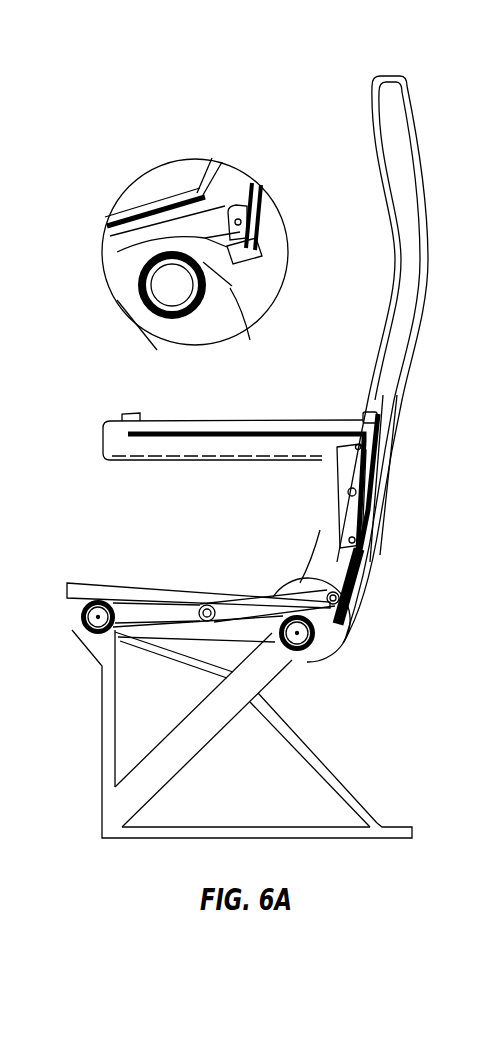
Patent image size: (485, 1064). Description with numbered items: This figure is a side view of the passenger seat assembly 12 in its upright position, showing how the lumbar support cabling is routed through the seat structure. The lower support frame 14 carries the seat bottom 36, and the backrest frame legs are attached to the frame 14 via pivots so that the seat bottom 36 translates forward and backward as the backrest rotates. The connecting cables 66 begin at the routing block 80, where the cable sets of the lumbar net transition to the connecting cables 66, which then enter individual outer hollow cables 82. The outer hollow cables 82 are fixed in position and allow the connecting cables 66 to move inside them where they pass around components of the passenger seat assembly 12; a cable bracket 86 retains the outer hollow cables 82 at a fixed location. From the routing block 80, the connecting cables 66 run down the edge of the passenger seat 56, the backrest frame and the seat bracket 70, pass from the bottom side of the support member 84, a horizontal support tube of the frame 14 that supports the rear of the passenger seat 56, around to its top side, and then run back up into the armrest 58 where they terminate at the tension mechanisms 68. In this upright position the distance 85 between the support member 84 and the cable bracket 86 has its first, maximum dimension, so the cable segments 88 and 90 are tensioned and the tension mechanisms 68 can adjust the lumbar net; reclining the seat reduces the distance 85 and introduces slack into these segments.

The passenger seat assembly 12 is at (329, 64).
The lower support frame 14 is at (118, 807).
The seat bottom 36 is at (82, 603).
The passenger seat 56 is at (385, 142).
The armrest 58 is at (247, 450).
The connecting cables 66 is at (170, 244).
The tension mechanisms 68 is at (123, 424).
The seat bracket 70 is at (350, 585).
The routing block 80 is at (366, 413).
The outer hollow cables 82 is at (208, 432).
The support member 84 is at (172, 303).
The distance 85 is at (262, 262).
The cable bracket 86 is at (248, 242).
The cable segment 88 is at (203, 208).
The cable segment 90 is at (250, 338).